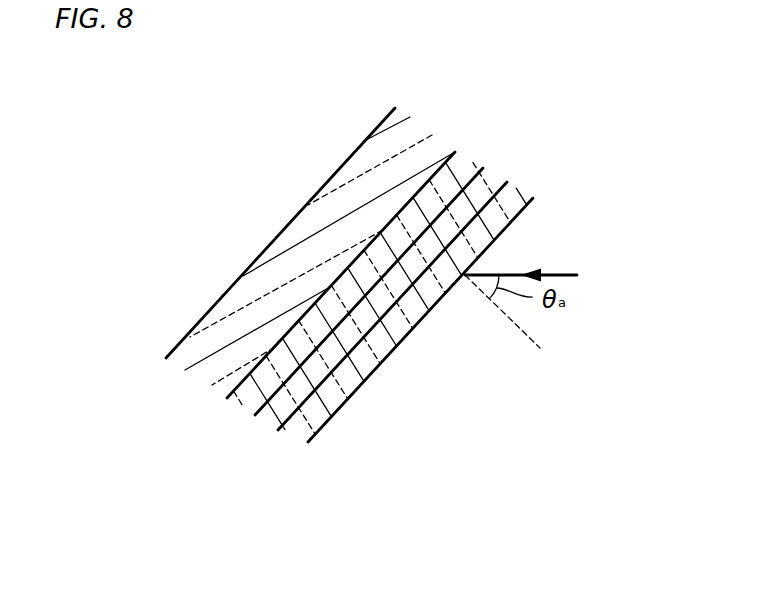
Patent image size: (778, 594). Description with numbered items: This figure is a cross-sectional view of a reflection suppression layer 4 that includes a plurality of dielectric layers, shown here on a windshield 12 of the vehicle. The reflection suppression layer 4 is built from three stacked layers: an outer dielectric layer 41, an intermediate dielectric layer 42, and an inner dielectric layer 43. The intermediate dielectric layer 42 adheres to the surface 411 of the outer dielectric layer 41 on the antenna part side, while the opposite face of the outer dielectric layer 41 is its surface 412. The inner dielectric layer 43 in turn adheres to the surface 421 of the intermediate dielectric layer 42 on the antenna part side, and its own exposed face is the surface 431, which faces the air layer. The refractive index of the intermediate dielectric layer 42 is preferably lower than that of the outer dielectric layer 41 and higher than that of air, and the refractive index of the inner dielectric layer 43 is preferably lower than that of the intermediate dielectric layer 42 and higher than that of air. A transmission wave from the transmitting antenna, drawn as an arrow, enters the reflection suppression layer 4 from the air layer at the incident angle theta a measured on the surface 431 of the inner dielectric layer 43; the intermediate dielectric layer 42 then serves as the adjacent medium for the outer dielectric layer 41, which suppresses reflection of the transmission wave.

The light guide plate 12 is at (285, 244).
The reflection suppression layer 4 is at (402, 323).
The outer dielectric layer 41 is at (404, 270).
The surface of the outer dielectric layer 411 is at (456, 204).
The second surface of first layer 412 is at (441, 173).
The intermediate dielectric layer 42 is at (364, 337).
The surface of the intermediate dielectric layer 421 is at (305, 418).
The inner dielectric layer 43 is at (400, 360).
The surface of the inner dielectric layer 431 is at (338, 416).